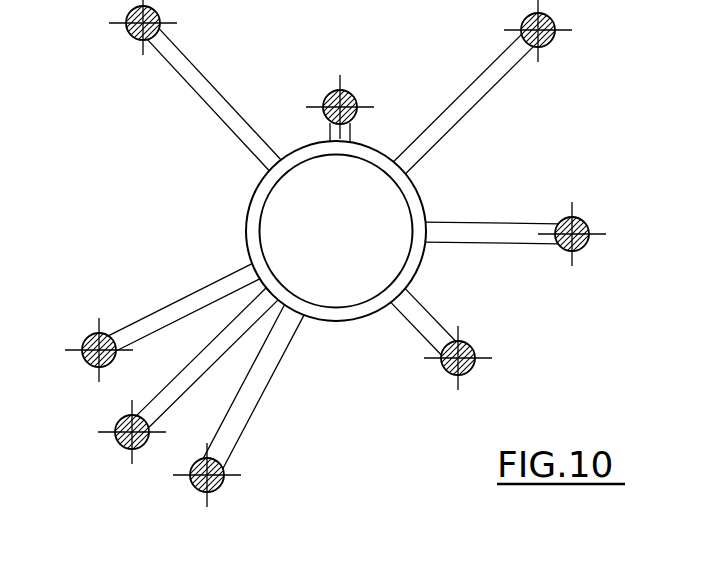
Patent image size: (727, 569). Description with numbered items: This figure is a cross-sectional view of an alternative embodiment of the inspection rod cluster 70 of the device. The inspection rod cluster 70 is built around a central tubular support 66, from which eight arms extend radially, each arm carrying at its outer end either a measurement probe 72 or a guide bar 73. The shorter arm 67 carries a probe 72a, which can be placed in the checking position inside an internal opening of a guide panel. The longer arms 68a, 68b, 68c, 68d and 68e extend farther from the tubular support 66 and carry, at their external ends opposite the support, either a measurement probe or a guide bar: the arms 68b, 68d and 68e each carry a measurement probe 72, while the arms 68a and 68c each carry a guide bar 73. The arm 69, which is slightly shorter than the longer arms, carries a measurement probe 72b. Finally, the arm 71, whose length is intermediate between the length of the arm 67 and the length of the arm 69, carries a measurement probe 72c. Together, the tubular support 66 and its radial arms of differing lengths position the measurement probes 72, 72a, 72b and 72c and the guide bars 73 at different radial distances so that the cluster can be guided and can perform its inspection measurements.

The tubular support 66 is at (345, 313).
The arm 67 is at (330, 127).
The arm 68a is at (463, 108).
The arm 68b is at (263, 370).
The arm 68c is at (168, 393).
The arm 68d is at (192, 293).
The arm 68e is at (210, 107).
The arm 69 is at (498, 232).
The inspection rod cluster 70 is at (513, 307).
The arm 71 is at (420, 312).
The measurement probe 72 is at (127, 33).
The probe 72a is at (350, 90).
The measurement probe 72b is at (587, 222).
The measurement probe 72c is at (447, 377).
The guide bar 73 is at (553, 43).